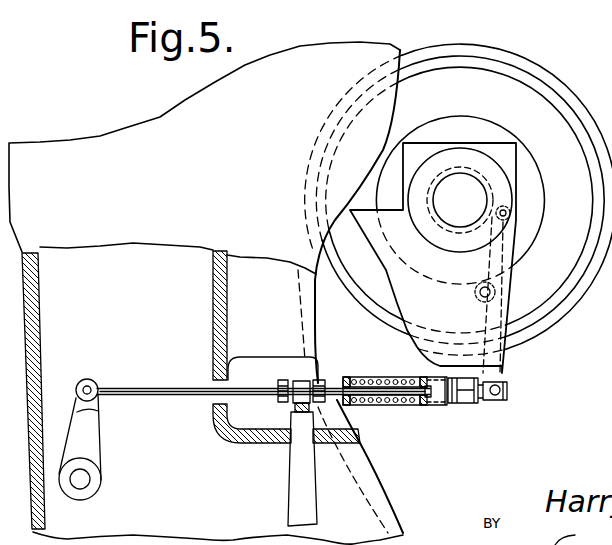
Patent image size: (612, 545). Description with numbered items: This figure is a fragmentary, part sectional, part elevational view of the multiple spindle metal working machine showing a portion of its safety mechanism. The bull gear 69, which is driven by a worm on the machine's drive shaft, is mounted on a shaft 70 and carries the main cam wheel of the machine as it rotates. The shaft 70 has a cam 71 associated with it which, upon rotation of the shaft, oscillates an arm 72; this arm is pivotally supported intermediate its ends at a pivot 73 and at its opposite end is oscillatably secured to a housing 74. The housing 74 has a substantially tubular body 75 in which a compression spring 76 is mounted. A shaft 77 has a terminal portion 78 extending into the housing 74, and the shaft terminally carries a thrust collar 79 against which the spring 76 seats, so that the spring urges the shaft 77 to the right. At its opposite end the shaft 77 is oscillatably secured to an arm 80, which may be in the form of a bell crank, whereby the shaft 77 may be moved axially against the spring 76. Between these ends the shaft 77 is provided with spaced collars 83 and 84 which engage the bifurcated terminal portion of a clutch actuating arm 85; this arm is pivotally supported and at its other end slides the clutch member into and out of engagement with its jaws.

The bull gear 69 is at (553, 90).
The shaft 70 is at (453, 212).
The cam 71 is at (489, 195).
The arm 72 is at (493, 257).
The pivot 73 is at (493, 290).
The housing 74 is at (508, 388).
The tubular body 75 is at (438, 404).
The compression spring 76 is at (404, 405).
The shaft 77 is at (163, 395).
The terminal portion 78 is at (427, 405).
The thrust collar 79 is at (419, 378).
The arm 80 is at (85, 440).
The collar 83 is at (283, 379).
The collar 84 is at (321, 382).
The clutch actuating arm 85 is at (324, 464).